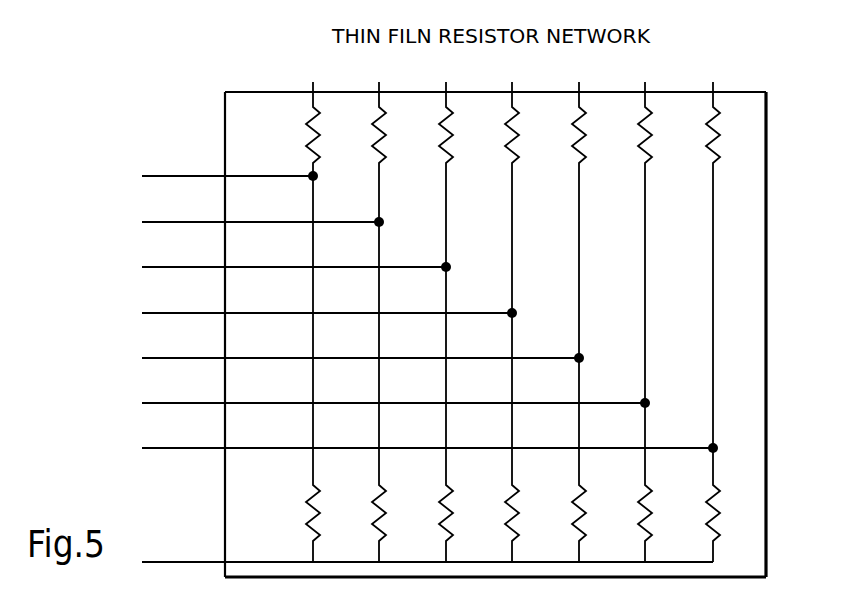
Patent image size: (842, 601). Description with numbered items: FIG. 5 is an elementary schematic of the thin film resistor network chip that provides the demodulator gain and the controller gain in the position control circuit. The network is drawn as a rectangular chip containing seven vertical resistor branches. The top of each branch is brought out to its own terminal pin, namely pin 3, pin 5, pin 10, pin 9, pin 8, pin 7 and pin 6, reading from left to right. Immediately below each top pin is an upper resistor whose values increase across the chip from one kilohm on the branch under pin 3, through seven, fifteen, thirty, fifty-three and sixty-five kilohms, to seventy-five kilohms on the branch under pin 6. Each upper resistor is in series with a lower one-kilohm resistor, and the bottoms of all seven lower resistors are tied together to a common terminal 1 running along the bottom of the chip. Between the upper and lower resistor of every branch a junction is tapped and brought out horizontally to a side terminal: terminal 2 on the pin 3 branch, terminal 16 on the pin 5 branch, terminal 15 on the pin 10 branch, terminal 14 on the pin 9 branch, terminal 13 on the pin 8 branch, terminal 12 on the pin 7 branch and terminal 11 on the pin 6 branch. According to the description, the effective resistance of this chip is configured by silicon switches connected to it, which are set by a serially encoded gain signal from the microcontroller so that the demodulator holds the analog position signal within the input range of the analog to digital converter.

The common terminal of 1K resistors 1 is at (416, 561).
The terminal of 1K series resistor 2 is at (219, 177).
The terminal pin 3 of thin film resistor network 3 is at (295, 311).
The terminal pin 5 of thin film resistor network 5 is at (364, 311).
The terminal pin 6 of thin film resistor network 6 is at (692, 311).
The terminal pin 7 of thin film resistor network 7 is at (624, 311).
The terminal pin 8 of thin film resistor network 8 is at (557, 311).
The terminal pin 9 of thin film resistor network 9 is at (490, 311).
The terminal pin 10 of thin film resistor network 10 is at (426, 311).
The terminal of 75K resistor tap 11 is at (413, 449).
The terminal of 65K resistor tap 12 is at (380, 404).
The terminal of 53K resistor tap 13 is at (347, 359).
The terminal of 30K resistor tap 14 is at (314, 314).
The terminal of 15K resistor tap 15 is at (281, 268).
The terminal of 7K resistor tap 16 is at (247, 223).